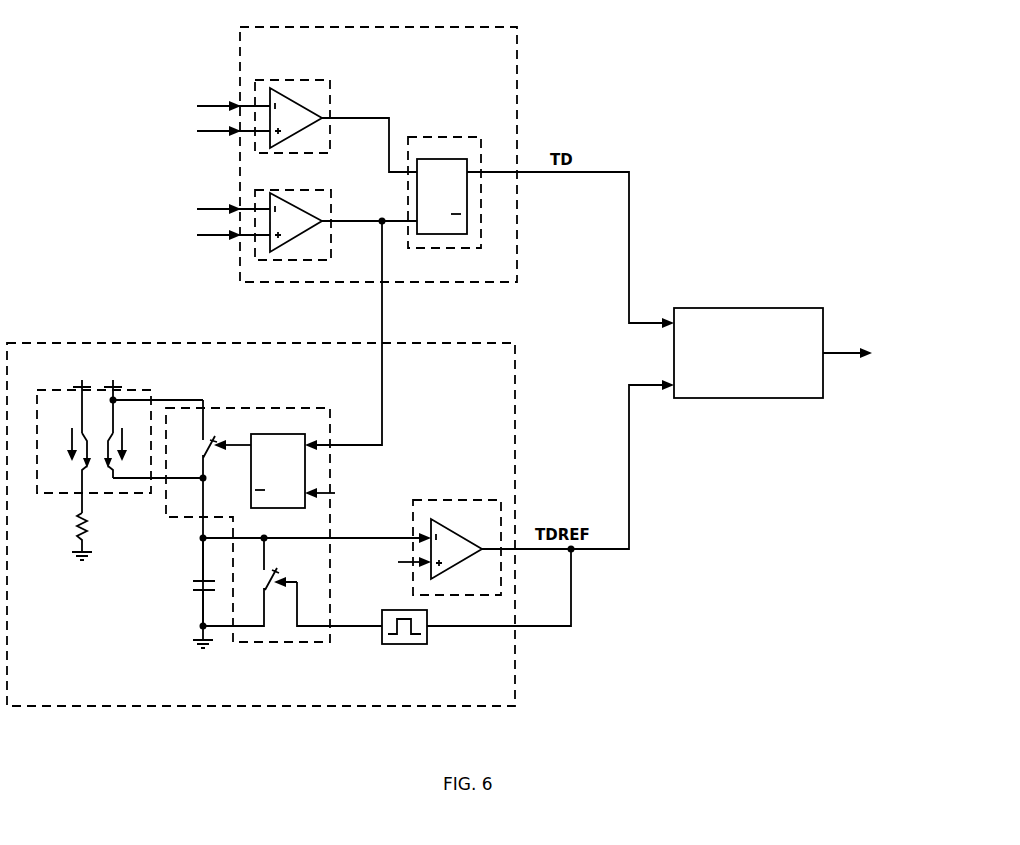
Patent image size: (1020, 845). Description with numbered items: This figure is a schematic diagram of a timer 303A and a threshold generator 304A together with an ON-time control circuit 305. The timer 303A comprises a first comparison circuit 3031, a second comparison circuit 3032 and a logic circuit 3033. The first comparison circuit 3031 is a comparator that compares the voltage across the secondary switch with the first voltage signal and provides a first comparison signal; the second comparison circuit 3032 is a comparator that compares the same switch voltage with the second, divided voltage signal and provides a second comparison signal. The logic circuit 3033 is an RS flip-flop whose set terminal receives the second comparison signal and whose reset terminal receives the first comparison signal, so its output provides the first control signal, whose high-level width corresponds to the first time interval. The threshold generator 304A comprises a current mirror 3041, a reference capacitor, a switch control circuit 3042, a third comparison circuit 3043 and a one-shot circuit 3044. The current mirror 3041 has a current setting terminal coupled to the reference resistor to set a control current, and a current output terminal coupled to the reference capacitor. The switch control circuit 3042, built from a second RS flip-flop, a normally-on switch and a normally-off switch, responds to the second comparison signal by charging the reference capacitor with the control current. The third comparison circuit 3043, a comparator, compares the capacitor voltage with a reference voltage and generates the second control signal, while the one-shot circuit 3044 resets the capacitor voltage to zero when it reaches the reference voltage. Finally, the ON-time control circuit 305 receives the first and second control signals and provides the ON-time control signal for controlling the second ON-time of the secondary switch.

The first comparison circuit 3031 is at (322, 80).
The second comparison circuit 3032 is at (315, 190).
The logic circuit 3033 is at (432, 137).
The timer 303A is at (290, 283).
The current mirror 3041 is at (150, 494).
The switch control circuit 3042 is at (290, 643).
The third comparison circuit 3043 is at (433, 500).
The one-shot circuit 3044 is at (393, 645).
The threshold generator 304A is at (90, 707).
The ON-time control circuit 305 is at (685, 399).